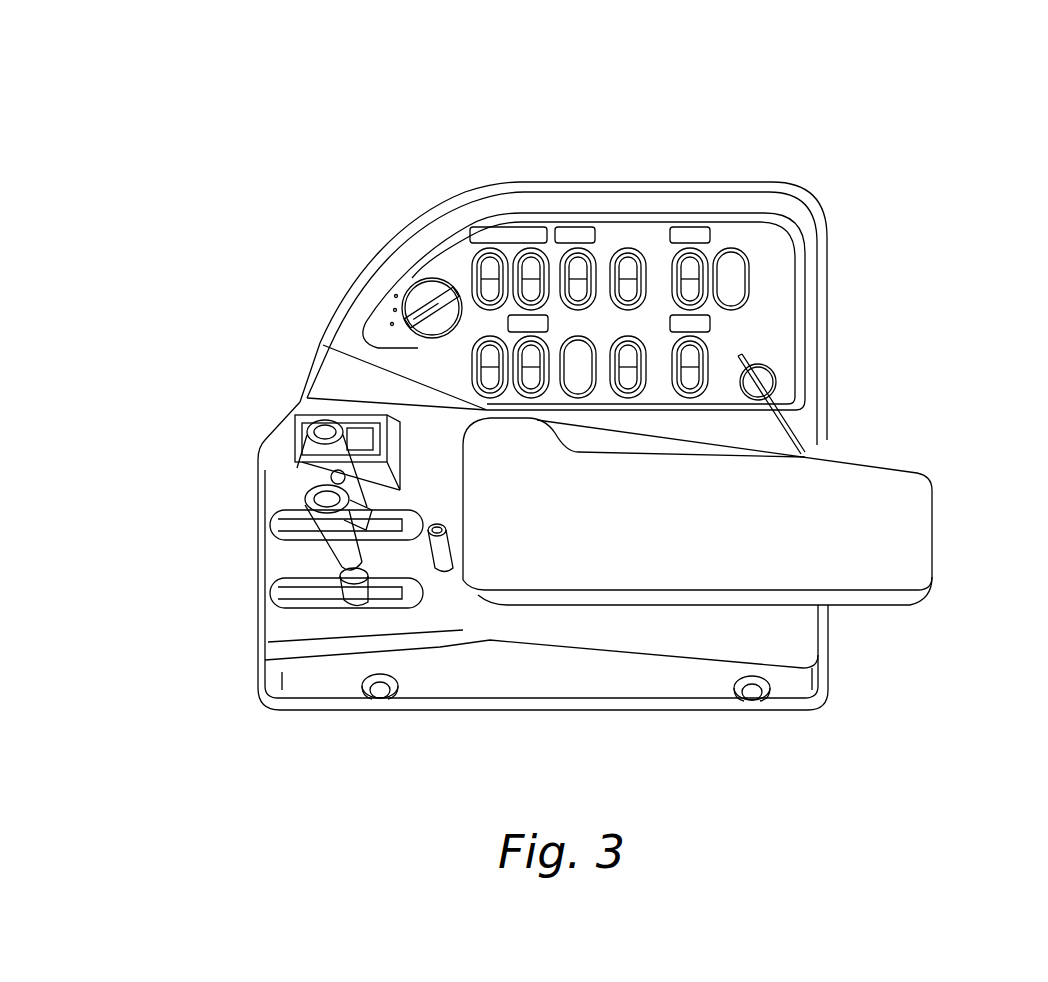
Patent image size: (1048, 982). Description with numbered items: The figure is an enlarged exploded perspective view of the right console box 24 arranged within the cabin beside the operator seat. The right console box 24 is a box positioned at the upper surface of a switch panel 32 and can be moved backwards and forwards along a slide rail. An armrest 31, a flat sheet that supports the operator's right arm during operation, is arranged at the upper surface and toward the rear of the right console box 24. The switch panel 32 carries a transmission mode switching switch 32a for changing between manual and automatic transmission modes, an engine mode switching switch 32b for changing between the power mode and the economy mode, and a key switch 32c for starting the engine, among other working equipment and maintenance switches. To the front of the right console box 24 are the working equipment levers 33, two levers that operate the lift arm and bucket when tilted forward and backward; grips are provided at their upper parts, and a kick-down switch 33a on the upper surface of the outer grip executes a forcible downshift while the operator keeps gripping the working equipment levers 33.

The right console box 24 is at (205, 138).
The armrest 31 is at (915, 513).
The switch panel 32 is at (757, 218).
The transmission mode switching switch 32a is at (415, 292).
The engine mode switching switch 32b is at (484, 362).
The key switch 32c is at (777, 382).
The working equipment levers 33 is at (305, 508).
The kick-down switch 33a is at (297, 425).